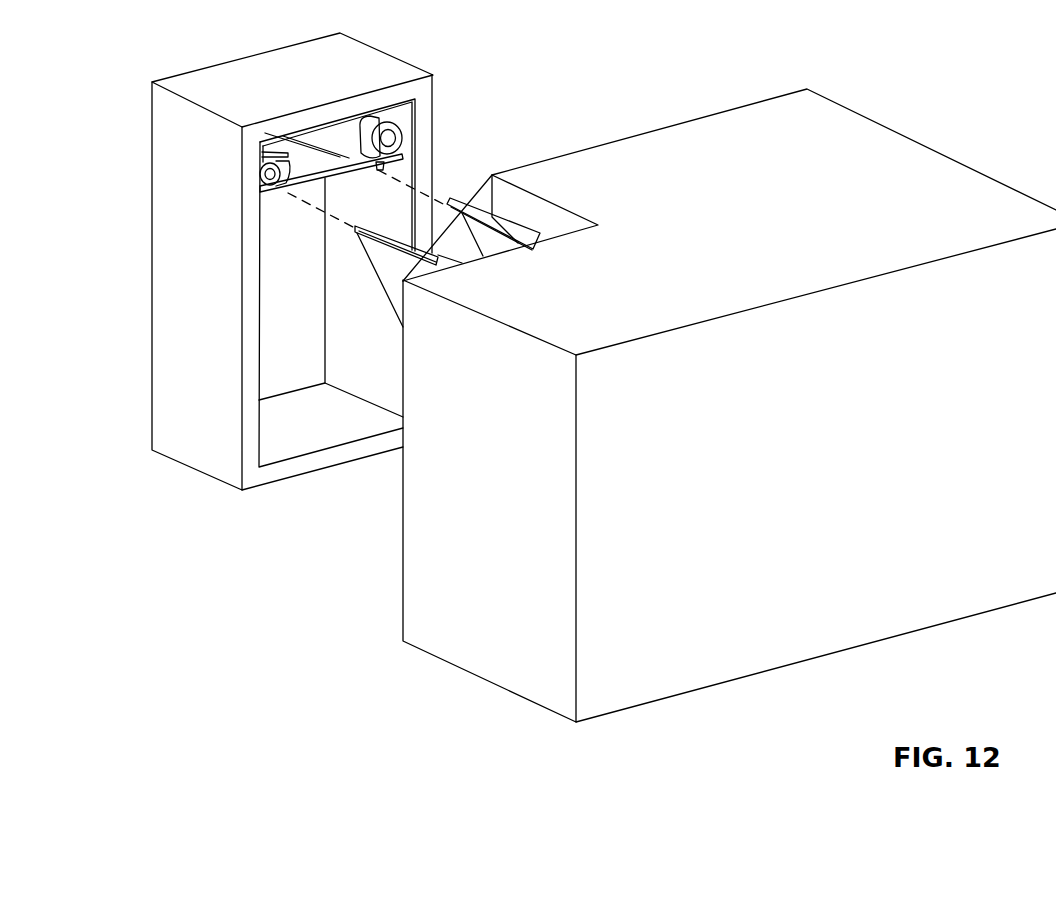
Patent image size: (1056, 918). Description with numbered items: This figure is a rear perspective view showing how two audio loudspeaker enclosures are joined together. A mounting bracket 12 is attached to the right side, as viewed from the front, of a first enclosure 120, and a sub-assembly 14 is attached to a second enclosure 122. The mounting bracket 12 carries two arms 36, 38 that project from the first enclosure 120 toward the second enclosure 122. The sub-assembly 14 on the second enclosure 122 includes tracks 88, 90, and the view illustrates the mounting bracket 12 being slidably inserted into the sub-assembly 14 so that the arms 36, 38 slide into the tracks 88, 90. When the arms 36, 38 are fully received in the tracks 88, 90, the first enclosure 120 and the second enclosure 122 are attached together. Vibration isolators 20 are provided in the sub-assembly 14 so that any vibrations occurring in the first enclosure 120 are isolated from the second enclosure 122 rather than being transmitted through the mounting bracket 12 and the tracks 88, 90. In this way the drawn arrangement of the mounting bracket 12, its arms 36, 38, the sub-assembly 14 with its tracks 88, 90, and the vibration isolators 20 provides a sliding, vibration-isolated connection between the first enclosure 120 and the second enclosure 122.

The mounting bracket 12 is at (387, 332).
The sub-assembly 14 is at (412, 143).
The vibration isolators 20 is at (410, 128).
The arm 36 is at (465, 202).
The arm 38 is at (397, 237).
The track 88 is at (267, 200).
The track 90 is at (398, 168).
The first enclosure 120 is at (866, 175).
The second enclosure 122 is at (367, 67).